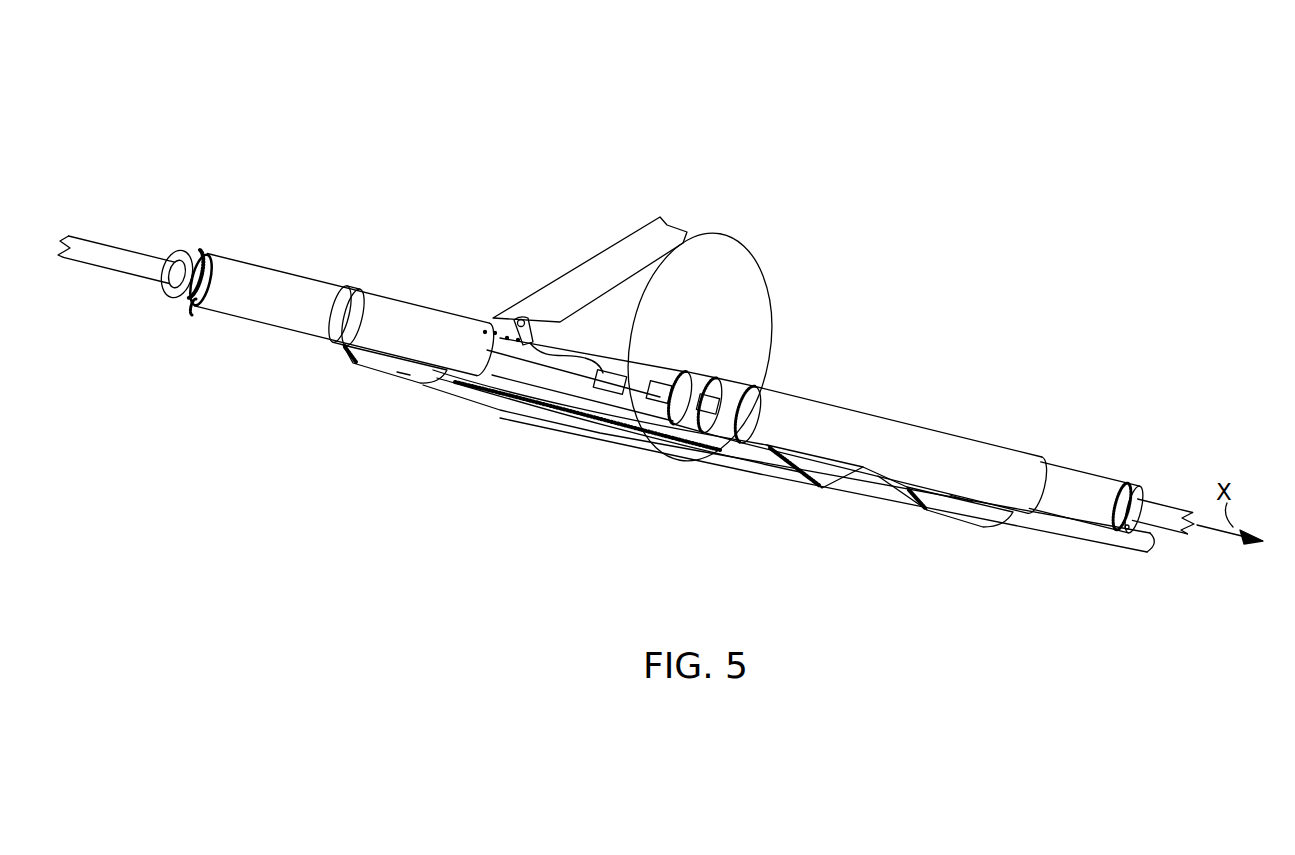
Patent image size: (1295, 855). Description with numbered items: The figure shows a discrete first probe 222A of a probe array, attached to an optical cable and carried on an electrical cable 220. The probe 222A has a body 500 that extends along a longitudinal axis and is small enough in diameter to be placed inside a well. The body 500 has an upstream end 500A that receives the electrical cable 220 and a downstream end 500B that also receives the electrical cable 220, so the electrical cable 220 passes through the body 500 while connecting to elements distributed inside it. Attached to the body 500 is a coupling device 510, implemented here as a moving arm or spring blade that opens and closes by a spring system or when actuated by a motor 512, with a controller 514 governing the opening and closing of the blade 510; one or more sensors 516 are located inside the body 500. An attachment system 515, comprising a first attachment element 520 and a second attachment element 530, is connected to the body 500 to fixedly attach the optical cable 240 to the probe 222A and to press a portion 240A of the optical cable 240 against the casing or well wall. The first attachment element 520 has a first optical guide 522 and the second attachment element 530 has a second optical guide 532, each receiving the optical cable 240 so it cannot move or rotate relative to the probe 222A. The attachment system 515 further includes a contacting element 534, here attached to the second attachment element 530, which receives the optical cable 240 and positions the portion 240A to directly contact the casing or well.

The first probe 222A is at (1092, 64).
The electrical cable 220 is at (94, 240).
The upstream end 500A is at (178, 252).
The body 500 is at (1067, 463).
The downstream end 500B is at (1124, 482).
The coupling device 510 is at (590, 263).
The motor 512 is at (601, 372).
The controller 514 is at (663, 378).
The attachment system 515 is at (907, 153).
The sensors 516 is at (712, 392).
The first attachment element 520 is at (411, 300).
The first optical guide 522 is at (396, 372).
The second attachment element 530 is at (942, 430).
The second optical guide 532 is at (955, 512).
The contacting element 534 is at (823, 472).
The optical cable 240 is at (897, 515).
The portion of the optical cable 240A is at (614, 430).